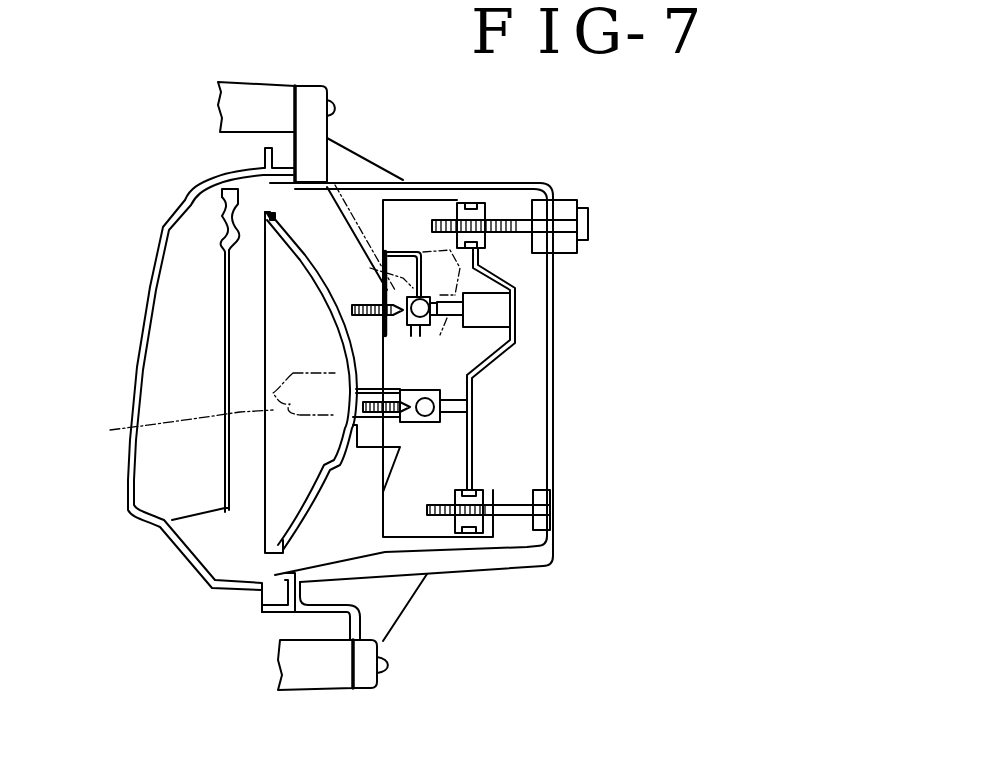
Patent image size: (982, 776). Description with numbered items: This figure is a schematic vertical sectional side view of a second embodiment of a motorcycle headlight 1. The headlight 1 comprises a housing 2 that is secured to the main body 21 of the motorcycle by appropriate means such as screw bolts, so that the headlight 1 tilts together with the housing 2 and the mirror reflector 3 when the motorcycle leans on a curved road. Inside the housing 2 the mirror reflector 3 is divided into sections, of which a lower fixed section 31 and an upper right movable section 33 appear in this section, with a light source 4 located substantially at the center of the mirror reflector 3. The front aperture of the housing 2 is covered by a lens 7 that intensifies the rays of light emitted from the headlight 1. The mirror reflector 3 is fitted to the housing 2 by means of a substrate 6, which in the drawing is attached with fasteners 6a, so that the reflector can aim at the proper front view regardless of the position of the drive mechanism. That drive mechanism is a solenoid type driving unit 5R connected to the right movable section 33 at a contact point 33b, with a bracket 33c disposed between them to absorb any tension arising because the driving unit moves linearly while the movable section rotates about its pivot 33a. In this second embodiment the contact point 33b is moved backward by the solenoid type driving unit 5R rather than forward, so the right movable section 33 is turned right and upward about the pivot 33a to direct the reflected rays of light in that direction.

The headlight 1 is at (133, 318).
The housing 2 is at (468, 183).
The mirror reflector 3 is at (262, 545).
The light source 4 is at (290, 404).
The solenoid type driving unit 5R is at (510, 305).
The substrate 6 is at (497, 357).
The mounting bolt 6a is at (513, 222).
The lens 7 is at (162, 238).
The main body 21 is at (237, 104).
The lower fixed section 31 is at (323, 490).
The upper right movable section 33 is at (303, 253).
The pivot 33a is at (430, 423).
The contact point 33b is at (352, 308).
The bracket 33c is at (405, 250).